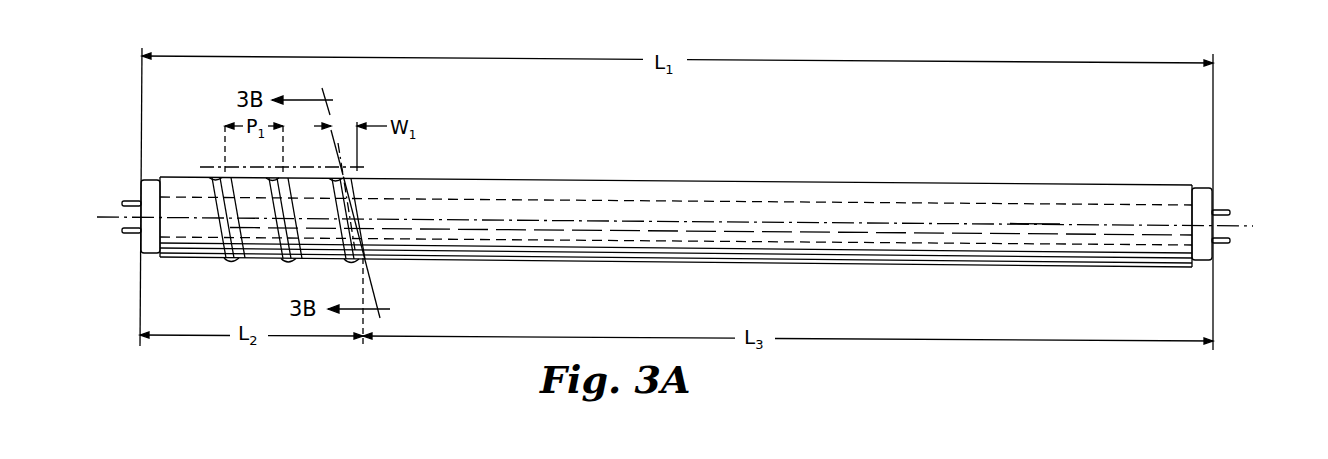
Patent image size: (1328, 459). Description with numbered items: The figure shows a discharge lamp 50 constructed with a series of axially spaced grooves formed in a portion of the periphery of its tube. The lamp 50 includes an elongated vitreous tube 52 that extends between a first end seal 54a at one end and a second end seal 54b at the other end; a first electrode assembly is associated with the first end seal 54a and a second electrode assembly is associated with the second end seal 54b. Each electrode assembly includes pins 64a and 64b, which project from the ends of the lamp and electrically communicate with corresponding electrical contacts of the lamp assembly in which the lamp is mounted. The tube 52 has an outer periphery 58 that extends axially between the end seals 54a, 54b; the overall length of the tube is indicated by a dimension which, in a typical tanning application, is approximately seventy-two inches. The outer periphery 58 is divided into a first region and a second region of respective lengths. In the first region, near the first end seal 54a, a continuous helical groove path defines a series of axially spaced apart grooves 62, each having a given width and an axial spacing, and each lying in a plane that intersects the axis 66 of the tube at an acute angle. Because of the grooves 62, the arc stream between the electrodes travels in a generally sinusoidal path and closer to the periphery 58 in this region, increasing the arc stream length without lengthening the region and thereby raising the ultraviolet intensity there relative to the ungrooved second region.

The lamp 50 is at (893, 155).
The elongated vitreous tube 52 is at (771, 183).
The first end seal 54a is at (158, 178).
The second end seal 54b is at (1205, 266).
The outer periphery 58 is at (556, 181).
The grooves 62 is at (350, 266).
The pin 64a is at (130, 200).
The pin 64b is at (132, 235).
The axis 66 is at (1030, 222).